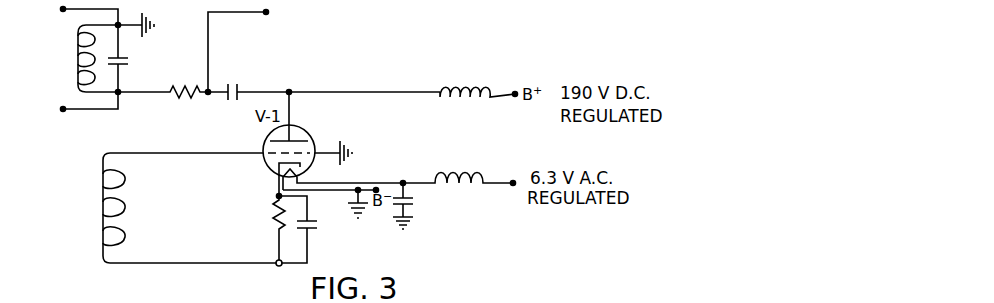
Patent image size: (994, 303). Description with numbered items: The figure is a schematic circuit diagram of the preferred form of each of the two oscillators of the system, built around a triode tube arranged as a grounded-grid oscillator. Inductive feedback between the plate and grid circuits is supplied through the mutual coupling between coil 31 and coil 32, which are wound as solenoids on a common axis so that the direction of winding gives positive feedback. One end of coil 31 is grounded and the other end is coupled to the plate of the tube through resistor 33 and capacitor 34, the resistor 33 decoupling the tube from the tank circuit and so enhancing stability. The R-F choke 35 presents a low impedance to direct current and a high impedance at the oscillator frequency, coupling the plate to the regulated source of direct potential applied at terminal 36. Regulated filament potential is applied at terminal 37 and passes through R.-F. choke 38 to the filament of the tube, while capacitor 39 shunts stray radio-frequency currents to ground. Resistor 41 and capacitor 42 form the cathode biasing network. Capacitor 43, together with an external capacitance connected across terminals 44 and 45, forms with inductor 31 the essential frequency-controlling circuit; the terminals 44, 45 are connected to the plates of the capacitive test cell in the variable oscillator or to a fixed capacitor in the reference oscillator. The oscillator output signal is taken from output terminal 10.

The output terminal 10 is at (266, 12).
The coil 31 is at (76, 51).
The coil 32 is at (124, 207).
The resistor 33 is at (190, 88).
The capacitor 34 is at (240, 88).
The R-F choke 35 is at (458, 90).
The terminal 36 is at (515, 94).
The terminal 37 is at (513, 182).
The R.-F. choke 38 is at (446, 177).
The capacitor 39 is at (414, 201).
The resistor 41 is at (276, 226).
The capacitor 42 is at (316, 228).
The capacitor 43 is at (129, 61).
The terminal 44 is at (63, 9).
The terminal 45 is at (63, 108).